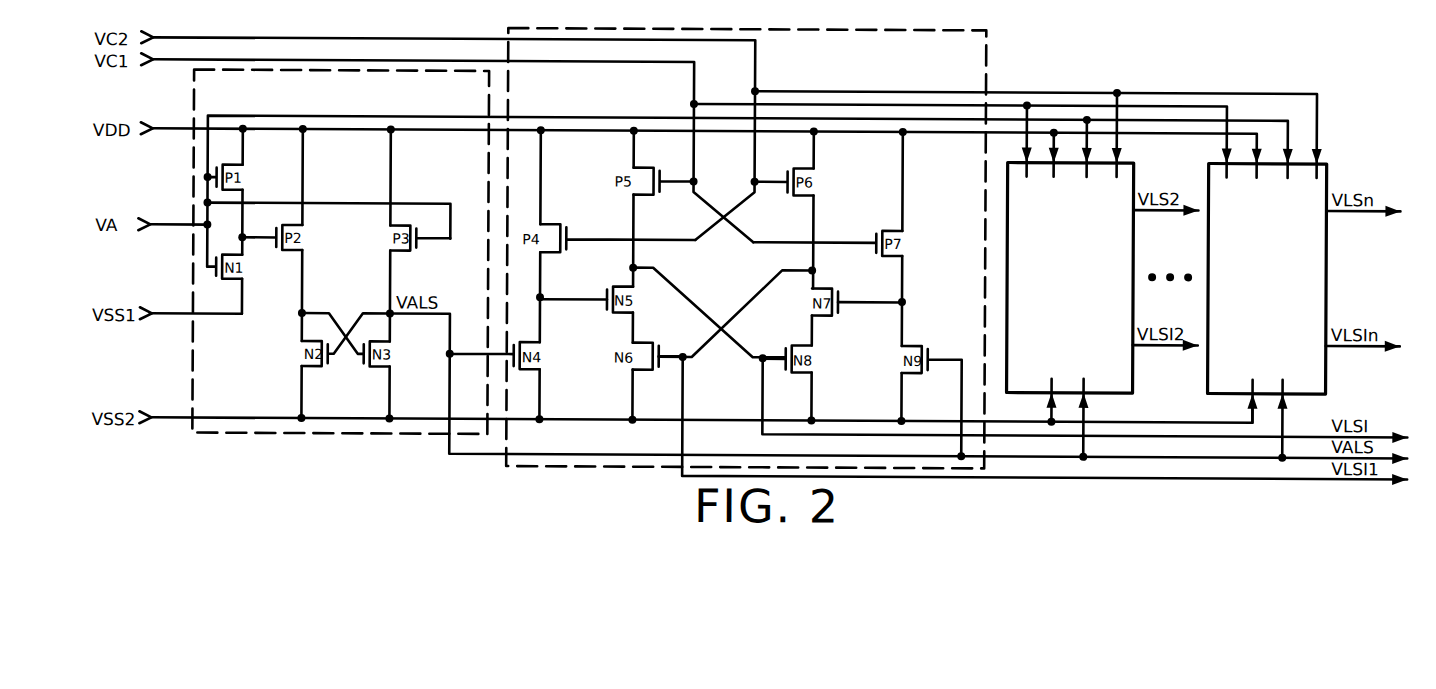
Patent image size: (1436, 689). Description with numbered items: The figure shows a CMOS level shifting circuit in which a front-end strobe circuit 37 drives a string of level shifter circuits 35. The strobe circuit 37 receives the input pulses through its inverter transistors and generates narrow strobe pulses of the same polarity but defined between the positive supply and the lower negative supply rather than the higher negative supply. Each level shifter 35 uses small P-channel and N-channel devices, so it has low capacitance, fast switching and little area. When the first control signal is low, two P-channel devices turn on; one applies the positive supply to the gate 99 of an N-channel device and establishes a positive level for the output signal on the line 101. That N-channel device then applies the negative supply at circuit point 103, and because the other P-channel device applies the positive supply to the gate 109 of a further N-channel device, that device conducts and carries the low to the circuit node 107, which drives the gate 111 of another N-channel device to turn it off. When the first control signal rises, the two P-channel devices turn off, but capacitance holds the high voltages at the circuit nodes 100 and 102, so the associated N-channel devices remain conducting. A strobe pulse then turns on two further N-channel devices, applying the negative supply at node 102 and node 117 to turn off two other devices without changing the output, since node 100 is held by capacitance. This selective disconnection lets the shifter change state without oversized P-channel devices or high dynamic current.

The level shifter circuit 35 is at (942, 29).
The strobe circuit 37 is at (396, 72).
The gate of device N8 99 is at (786, 351).
The circuit node 100 is at (635, 268).
The line 101 is at (820, 436).
The circuit node 102 is at (904, 300).
The circuit point 103 is at (814, 337).
The circuit node 107 is at (813, 271).
The gate of device N7 109 is at (840, 299).
The gate of device N6 111 is at (657, 356).
The circuit node 117 is at (540, 298).